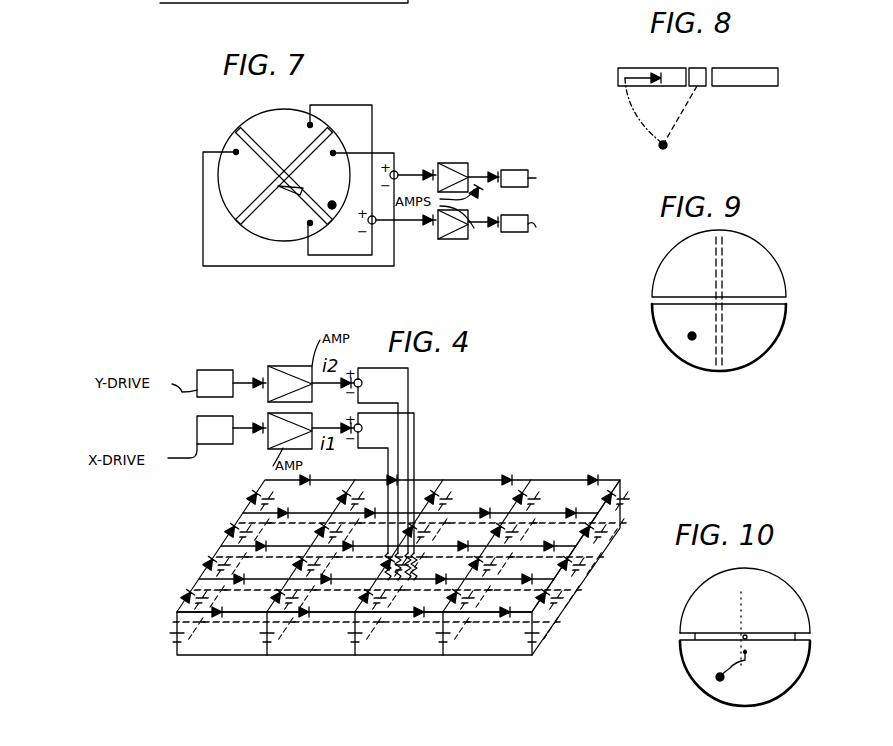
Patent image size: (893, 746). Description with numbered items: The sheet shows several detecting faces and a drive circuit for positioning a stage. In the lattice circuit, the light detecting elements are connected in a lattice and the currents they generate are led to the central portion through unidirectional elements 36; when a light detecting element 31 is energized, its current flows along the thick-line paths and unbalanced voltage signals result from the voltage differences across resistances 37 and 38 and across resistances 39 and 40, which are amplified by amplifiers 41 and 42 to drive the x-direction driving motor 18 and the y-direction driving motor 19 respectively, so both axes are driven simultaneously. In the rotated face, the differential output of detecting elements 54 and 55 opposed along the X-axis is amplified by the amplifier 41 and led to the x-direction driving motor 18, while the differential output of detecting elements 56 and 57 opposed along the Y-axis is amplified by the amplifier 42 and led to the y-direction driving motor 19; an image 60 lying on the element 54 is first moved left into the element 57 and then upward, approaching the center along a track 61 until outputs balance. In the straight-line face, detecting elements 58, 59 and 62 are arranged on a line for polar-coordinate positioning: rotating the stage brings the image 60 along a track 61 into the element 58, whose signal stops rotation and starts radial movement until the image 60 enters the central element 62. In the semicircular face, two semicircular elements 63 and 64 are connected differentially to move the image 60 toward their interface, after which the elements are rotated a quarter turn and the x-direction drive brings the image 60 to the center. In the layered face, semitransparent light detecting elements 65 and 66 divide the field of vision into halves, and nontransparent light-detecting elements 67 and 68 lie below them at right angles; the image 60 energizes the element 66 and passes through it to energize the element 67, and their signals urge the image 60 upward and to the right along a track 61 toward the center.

In FIG. 7, the x-direction driving motor 18 is at (514, 170).
In FIG. 4, the x-direction driving motor 18 is at (198, 432).
In FIG. 7, the y-direction driving motor 19 is at (514, 232).
In FIG. 4, the y-direction driving motor 19 is at (215, 370).
In FIG. 4, the light detecting element 31 is at (541, 484).
In FIG. 4, the unidirectional elements 36 is at (215, 612).
In FIG. 4, the resistance 37 is at (415, 568).
In FIG. 4, the resistance 38 is at (387, 560).
In FIG. 4, the resistance 39 is at (398, 582).
In FIG. 4, the resistance 40 is at (388, 565).
In FIG. 7, the amplifier 41 is at (452, 163).
In FIG. 4, the amplifier 41 is at (270, 446).
In FIG. 7, the amplifier 42 is at (452, 239).
In FIG. 4, the amplifier 42 is at (294, 366).
In FIG. 7, the detecting element 54 is at (345, 133).
In FIG. 7, the detecting element 55 is at (236, 152).
In FIG. 7, the detecting element 56 is at (259, 120).
In FIG. 7, the detecting element 57 is at (282, 238).
In FIG. 8, the detecting element 58 is at (682, 72).
In FIG. 8, the detecting element 59 is at (750, 73).
In FIG. 7, the image 60 is at (333, 209).
In FIG. 8, the image 60 is at (669, 143).
In FIG. 9, the image 60 is at (691, 340).
In FIG. 10, the image 60 is at (720, 681).
In FIG. 7, the track 61 is at (316, 201).
In FIG. 8, the track 61 is at (636, 118).
In FIG. 10, the track 61 is at (745, 660).
In FIG. 8, the central element 62 is at (697, 74).
In FIG. 9, the semicircular element 63 is at (668, 268).
In FIG. 9, the semicircular element 64 is at (661, 325).
In FIG. 10, the semitransparent light detecting element 65 is at (698, 598).
In FIG. 10, the semitransparent light detecting element 66 is at (691, 670).
In FIG. 10, the nontransparent light-detecting element 67 is at (684, 642).
In FIG. 10, the nontransparent light-detecting element 68 is at (805, 642).